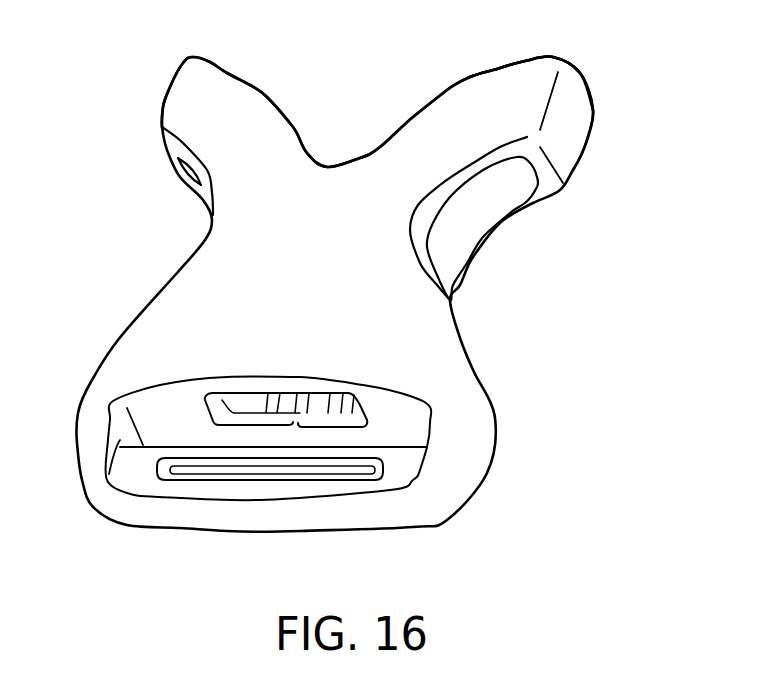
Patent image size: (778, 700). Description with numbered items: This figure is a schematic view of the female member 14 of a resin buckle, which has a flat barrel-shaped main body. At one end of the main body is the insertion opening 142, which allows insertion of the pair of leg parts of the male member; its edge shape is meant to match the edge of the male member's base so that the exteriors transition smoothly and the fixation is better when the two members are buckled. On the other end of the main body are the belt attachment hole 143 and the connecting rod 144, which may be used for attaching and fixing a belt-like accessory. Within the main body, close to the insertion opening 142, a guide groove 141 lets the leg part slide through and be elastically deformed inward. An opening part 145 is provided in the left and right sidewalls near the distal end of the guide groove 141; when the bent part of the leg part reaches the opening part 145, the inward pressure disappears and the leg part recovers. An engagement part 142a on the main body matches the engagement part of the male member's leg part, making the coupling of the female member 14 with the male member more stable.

The female member 14 is at (372, 316).
The guide groove 141 is at (193, 182).
The insertion opening 142 is at (342, 144).
The engagement part 142a is at (477, 77).
The belt attachment hole 143 is at (278, 400).
The connecting rod 144 is at (223, 490).
The opening part 145 is at (167, 243).